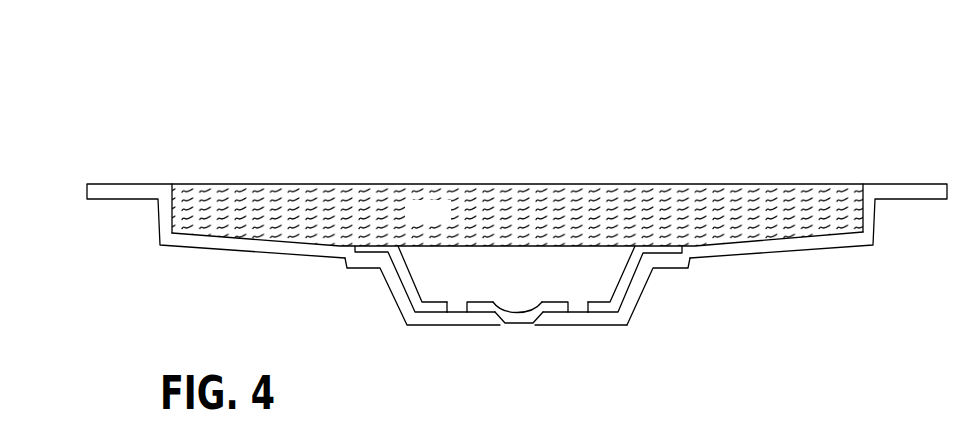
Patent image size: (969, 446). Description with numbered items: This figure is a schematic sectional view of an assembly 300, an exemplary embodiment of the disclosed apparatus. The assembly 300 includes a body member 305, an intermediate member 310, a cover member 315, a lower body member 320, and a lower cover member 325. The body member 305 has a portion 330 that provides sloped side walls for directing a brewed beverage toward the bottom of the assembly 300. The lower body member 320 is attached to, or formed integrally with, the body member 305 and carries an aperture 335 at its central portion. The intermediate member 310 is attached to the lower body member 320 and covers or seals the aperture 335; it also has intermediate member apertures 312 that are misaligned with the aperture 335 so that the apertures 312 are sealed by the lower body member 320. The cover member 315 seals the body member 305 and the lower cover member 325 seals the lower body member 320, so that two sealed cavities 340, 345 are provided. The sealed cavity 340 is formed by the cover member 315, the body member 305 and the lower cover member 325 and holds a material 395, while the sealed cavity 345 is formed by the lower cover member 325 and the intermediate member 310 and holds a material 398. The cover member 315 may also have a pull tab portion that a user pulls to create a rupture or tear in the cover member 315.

The assembly 300 is at (194, 104).
The body member 305 is at (133, 236).
The intermediate member 310 is at (421, 276).
The intermediate member apertures 312 is at (452, 310).
The cover member 315 is at (307, 177).
The lower body member 320 is at (395, 331).
The lower cover member 325 is at (619, 231).
The portion 330 is at (644, 292).
The aperture 335 is at (516, 338).
The sealed cavity 340 is at (795, 198).
The sealed cavity 345 is at (575, 284).
The material 395 is at (713, 195).
The material 398 is at (462, 284).